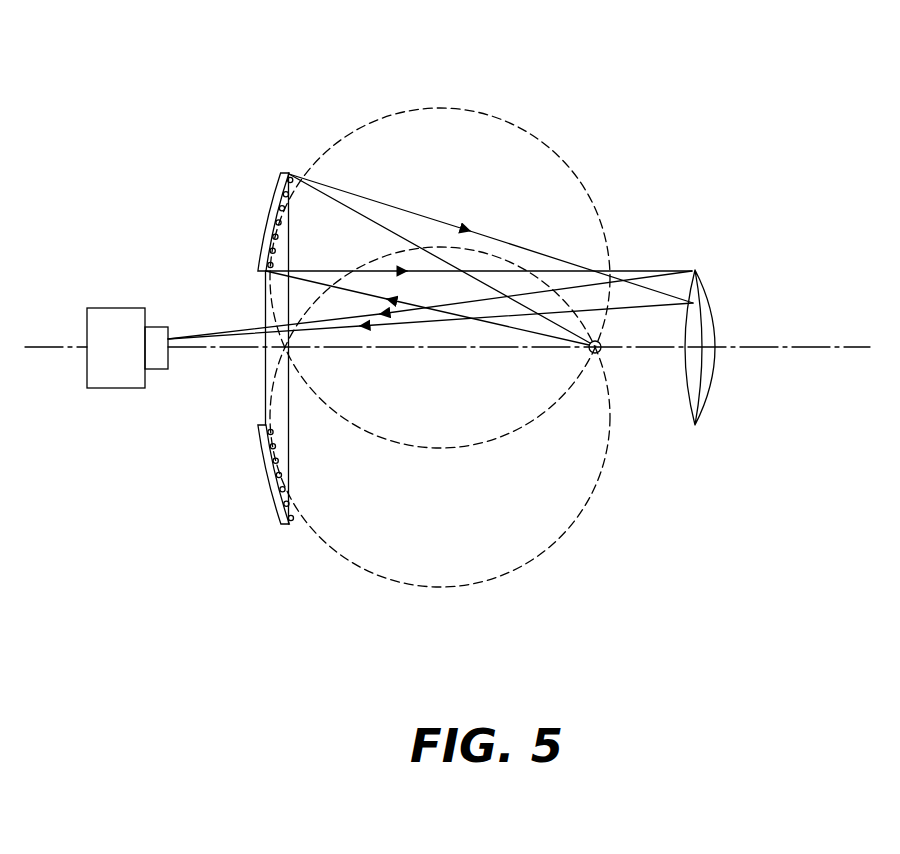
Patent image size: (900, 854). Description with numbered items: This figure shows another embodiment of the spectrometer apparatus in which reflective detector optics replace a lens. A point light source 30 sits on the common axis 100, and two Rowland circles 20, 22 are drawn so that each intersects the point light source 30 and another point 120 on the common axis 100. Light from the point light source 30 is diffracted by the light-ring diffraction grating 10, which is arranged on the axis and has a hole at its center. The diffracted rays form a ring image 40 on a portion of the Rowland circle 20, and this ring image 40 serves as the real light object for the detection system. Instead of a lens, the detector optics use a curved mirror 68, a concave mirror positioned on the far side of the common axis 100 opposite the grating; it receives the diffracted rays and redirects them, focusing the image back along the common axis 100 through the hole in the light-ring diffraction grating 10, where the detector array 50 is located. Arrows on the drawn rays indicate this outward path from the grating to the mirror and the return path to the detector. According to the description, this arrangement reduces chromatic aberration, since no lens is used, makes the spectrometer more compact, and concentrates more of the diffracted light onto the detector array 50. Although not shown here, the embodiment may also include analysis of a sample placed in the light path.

The light-ring diffraction grating 10 is at (266, 203).
The point on the common axis 120 is at (283, 347).
The Rowland circle 20 is at (436, 107).
The Rowland circle 22 is at (417, 587).
The point light source 30 is at (600, 352).
The ring image 40 is at (607, 275).
The detector array 50 is at (122, 315).
The curved mirror 68 is at (695, 270).
The common axis 100 is at (832, 346).